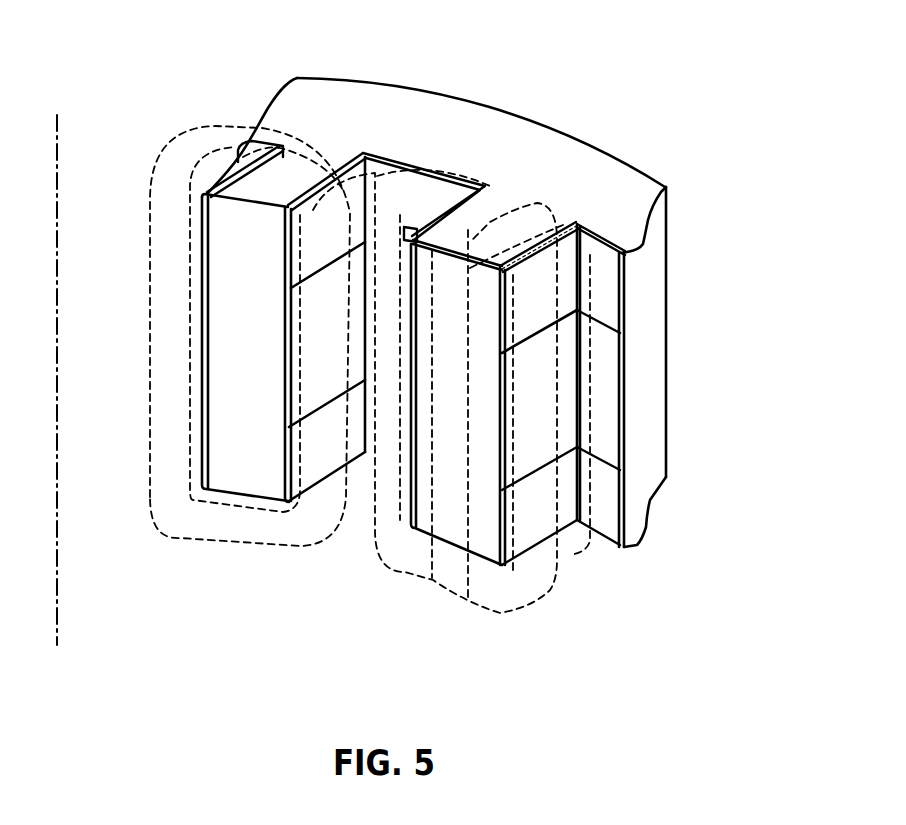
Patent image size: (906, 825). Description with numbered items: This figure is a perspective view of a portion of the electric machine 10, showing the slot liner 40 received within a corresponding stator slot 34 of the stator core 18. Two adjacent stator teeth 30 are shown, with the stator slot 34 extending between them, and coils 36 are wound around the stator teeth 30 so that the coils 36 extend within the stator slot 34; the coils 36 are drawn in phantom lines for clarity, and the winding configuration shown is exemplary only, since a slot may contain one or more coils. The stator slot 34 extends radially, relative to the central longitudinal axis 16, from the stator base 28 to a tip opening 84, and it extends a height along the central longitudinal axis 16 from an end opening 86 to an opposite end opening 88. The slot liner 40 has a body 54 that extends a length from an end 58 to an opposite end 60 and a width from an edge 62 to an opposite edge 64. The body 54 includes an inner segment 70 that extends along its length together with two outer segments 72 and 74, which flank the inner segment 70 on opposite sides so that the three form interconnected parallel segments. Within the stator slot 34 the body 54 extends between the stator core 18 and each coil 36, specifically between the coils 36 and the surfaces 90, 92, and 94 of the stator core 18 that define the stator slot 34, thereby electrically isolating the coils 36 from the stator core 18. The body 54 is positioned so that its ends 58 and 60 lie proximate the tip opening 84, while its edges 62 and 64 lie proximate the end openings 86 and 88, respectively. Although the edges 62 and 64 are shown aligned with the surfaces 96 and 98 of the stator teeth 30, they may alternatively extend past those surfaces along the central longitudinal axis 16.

The electric machine 10 is at (686, 100).
The central longitudinal axis 16 is at (60, 590).
The stator core 18 is at (460, 321).
The stator base 28 is at (533, 144).
The stator teeth 30 is at (232, 399).
The stator slot 34 is at (389, 161).
The coils 36 is at (212, 125).
The slot liner 40 is at (306, 478).
The body 54 is at (279, 441).
The end 58 is at (276, 372).
The end 60 is at (428, 398).
The edge 62 is at (333, 482).
The edge 64 is at (361, 147).
The inner segment 70 is at (285, 338).
The outer segment 72 is at (280, 476).
The outer segment 74 is at (325, 201).
The tip opening 84 is at (306, 407).
The end opening 86 is at (370, 523).
The end opening 88 is at (449, 174).
The surface 90 is at (306, 307).
The surface 92 is at (416, 164).
The surface 94 is at (447, 228).
The surface 96 is at (280, 497).
The surface 98 is at (277, 172).